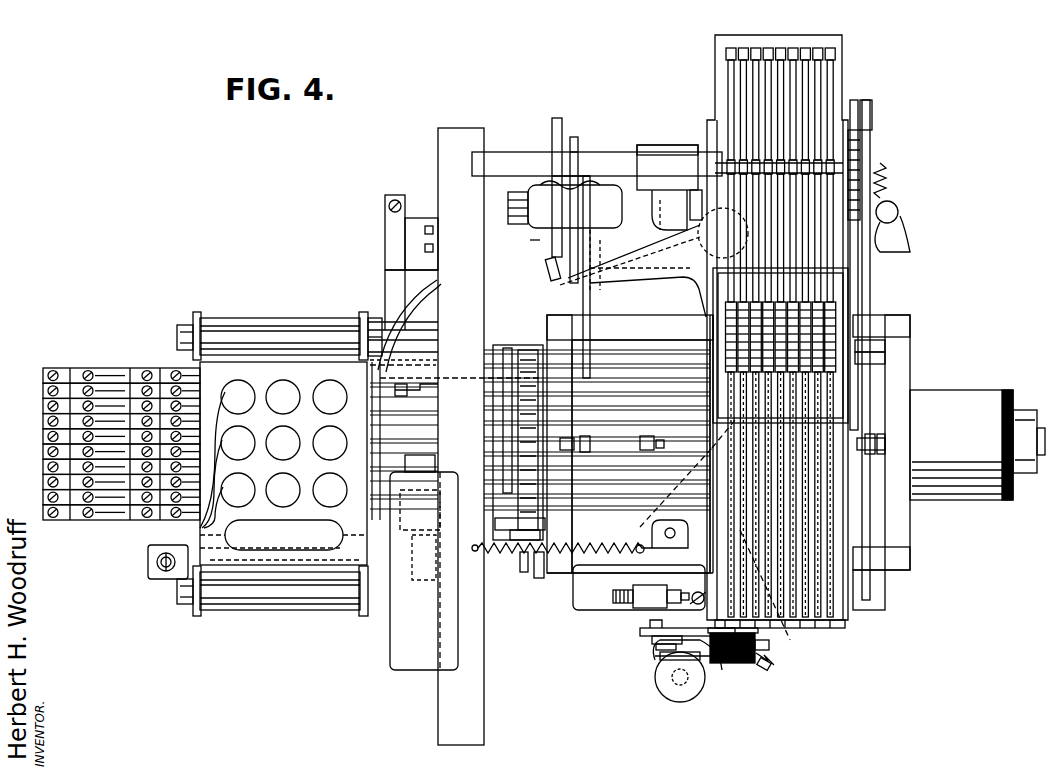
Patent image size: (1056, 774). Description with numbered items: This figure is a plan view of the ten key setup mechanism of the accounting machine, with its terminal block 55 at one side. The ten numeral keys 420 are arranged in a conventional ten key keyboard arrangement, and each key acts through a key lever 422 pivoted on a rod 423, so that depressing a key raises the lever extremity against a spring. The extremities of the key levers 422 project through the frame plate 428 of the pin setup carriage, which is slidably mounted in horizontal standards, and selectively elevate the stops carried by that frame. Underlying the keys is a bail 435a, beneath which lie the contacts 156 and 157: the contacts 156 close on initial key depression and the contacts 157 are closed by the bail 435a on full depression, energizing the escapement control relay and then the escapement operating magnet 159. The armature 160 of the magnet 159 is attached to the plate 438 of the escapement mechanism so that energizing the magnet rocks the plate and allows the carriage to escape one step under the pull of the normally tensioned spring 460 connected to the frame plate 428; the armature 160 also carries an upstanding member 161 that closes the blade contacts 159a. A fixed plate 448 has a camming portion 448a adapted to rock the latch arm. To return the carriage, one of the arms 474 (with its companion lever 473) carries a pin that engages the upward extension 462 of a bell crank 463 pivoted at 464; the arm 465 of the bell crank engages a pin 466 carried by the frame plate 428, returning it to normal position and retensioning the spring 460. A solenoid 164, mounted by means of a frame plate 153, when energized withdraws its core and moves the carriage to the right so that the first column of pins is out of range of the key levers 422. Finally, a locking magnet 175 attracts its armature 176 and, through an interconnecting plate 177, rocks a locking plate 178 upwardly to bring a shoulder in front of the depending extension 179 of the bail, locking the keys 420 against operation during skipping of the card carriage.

The terminal block 55 is at (32, 462).
The contacts 156 is at (396, 318).
The contacts 157 is at (368, 321).
The numeral keys 420 is at (200, 528).
The locking magnet 175 is at (300, 580).
The armature 176 is at (388, 558).
The key levers 422 is at (432, 292).
The bail 435a is at (437, 372).
The upward extension 462 is at (548, 279).
The pivot 464 is at (706, 236).
The bell crank 463 is at (688, 278).
The frame plate 428 is at (713, 330).
The arms 474 is at (846, 106).
The lever 473 is at (870, 106).
The solenoid 164 is at (955, 400).
The frame plate 153 is at (1022, 478).
The depending extension 179 is at (545, 522).
The arm 465 is at (644, 522).
The rod 423 is at (522, 560).
The interconnecting plate 177 is at (526, 574).
The locking plate 178 is at (540, 578).
The spring 460 is at (610, 566).
The plate 438 is at (668, 608).
The upstanding member 161 is at (642, 632).
The blade contacts 159a is at (658, 644).
The armature 160 is at (656, 658).
The escapement operating magnet 159 is at (662, 697).
The fixed plate 448 is at (766, 650).
The camming portion 448a is at (780, 617).
The pin 466 is at (792, 642).